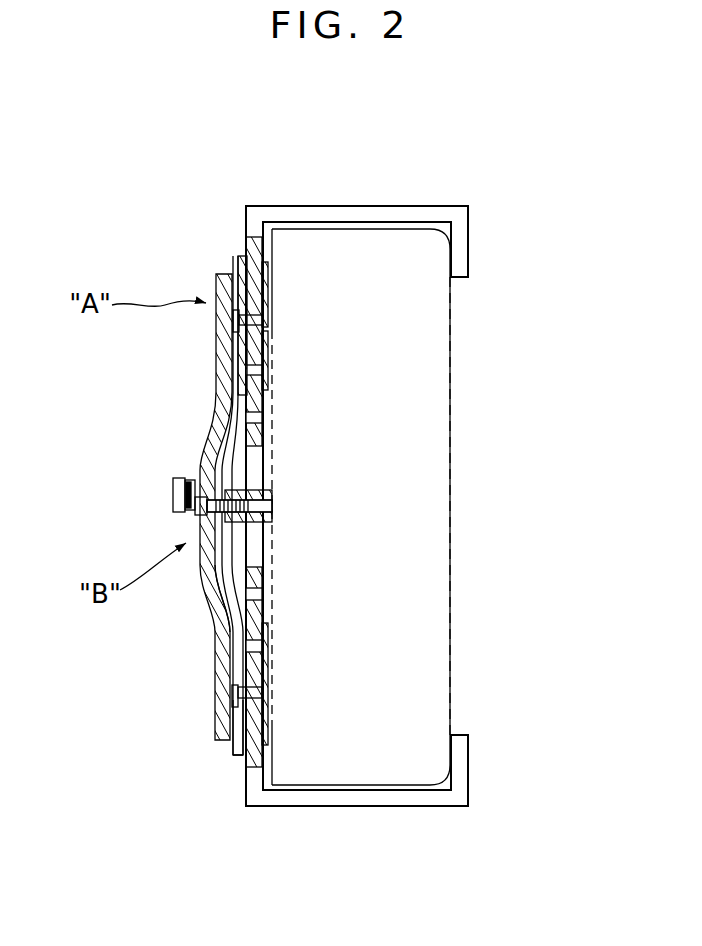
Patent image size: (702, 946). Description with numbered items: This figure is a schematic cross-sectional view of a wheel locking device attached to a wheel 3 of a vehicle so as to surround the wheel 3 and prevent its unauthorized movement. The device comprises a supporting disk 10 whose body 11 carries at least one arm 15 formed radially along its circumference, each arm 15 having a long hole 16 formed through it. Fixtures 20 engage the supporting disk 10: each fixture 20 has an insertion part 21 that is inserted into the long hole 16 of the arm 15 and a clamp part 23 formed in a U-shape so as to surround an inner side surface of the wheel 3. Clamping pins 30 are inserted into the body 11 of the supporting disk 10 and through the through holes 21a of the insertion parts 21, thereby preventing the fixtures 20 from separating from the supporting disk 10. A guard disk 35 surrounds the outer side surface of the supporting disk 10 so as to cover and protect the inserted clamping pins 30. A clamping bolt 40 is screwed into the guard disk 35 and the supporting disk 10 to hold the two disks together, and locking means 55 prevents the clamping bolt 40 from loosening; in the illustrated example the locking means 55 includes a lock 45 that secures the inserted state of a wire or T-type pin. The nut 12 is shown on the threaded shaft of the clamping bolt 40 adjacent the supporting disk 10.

The wheel 3 is at (452, 354).
The supporting disk 10 is at (238, 547).
The body 11 is at (234, 762).
The nut 12 is at (270, 512).
The arm 15 is at (260, 262).
The long hole 16 is at (217, 275).
The fixture 20 is at (374, 206).
The insertion part 21 is at (246, 254).
The through hole 21a is at (272, 345).
The clamp part 23 is at (466, 243).
The clamping pin 30 is at (233, 321).
The guard disk 35 is at (203, 597).
The clamping bolt 40 is at (184, 510).
The lock 45 is at (178, 490).
The locking means 55 is at (174, 462).